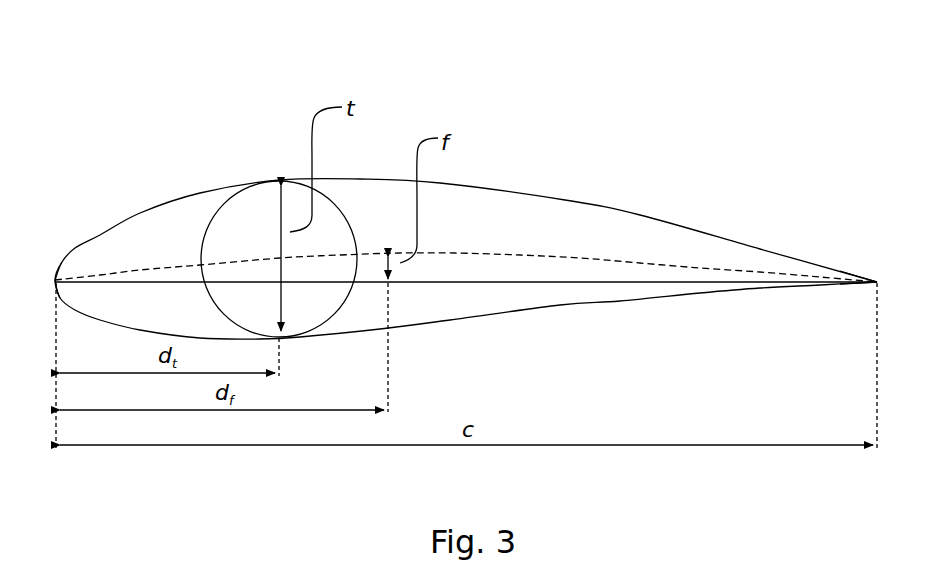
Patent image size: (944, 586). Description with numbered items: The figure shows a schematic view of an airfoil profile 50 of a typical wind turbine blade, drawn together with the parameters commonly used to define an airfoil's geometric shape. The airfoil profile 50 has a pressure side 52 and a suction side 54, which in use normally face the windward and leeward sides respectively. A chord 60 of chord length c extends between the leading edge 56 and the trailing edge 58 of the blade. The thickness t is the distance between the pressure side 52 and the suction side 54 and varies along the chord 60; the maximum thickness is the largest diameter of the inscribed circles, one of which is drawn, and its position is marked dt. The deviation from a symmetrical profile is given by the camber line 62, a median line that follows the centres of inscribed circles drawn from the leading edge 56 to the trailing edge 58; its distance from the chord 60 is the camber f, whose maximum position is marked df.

The airfoil profile 50 is at (448, 205).
The pressure side 52 is at (627, 310).
The suction side 54 is at (565, 200).
The leading edge 56 is at (55, 278).
The trailing edge 58 is at (877, 280).
The chord 60 is at (670, 281).
The camber line 62 is at (455, 255).